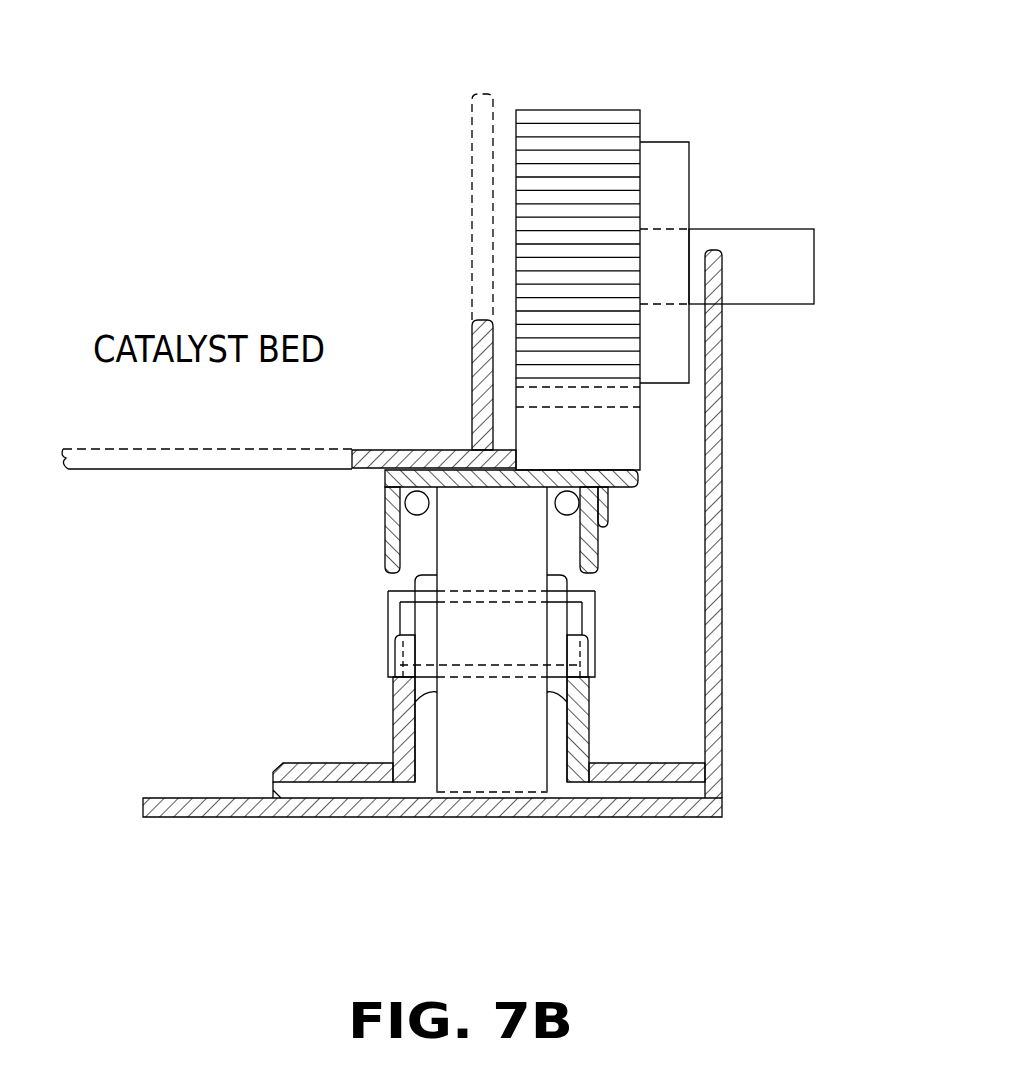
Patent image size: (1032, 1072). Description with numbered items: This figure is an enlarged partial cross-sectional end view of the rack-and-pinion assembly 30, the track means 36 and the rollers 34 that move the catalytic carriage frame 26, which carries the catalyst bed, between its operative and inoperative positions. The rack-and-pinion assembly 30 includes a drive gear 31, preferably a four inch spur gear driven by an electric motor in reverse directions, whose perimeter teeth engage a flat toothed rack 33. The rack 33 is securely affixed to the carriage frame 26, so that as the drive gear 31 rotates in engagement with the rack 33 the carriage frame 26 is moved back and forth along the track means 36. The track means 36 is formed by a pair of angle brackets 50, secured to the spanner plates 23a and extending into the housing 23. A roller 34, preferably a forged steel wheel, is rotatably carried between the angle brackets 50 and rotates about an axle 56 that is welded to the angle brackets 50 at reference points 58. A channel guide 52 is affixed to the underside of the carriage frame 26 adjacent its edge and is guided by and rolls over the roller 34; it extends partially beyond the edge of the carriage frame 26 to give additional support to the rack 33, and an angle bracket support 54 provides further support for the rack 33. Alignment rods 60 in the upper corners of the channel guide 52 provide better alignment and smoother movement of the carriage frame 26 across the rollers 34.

The housing 23 is at (742, 688).
The spanner plate 23a is at (260, 791).
The carriage frame 26 is at (462, 386).
The rack-and-pinion assembly 30 is at (742, 194).
The drive gear 31 is at (644, 106).
The rack 33 is at (660, 447).
The roller 34 is at (408, 582).
The track means 36 is at (384, 667).
The angle bracket 50 is at (370, 718).
The channel guide 52 is at (373, 539).
The angle bracket support 54 is at (622, 493).
The axle 56 is at (365, 613).
The reference point 58 is at (385, 684).
The alignment rod 60 is at (373, 499).